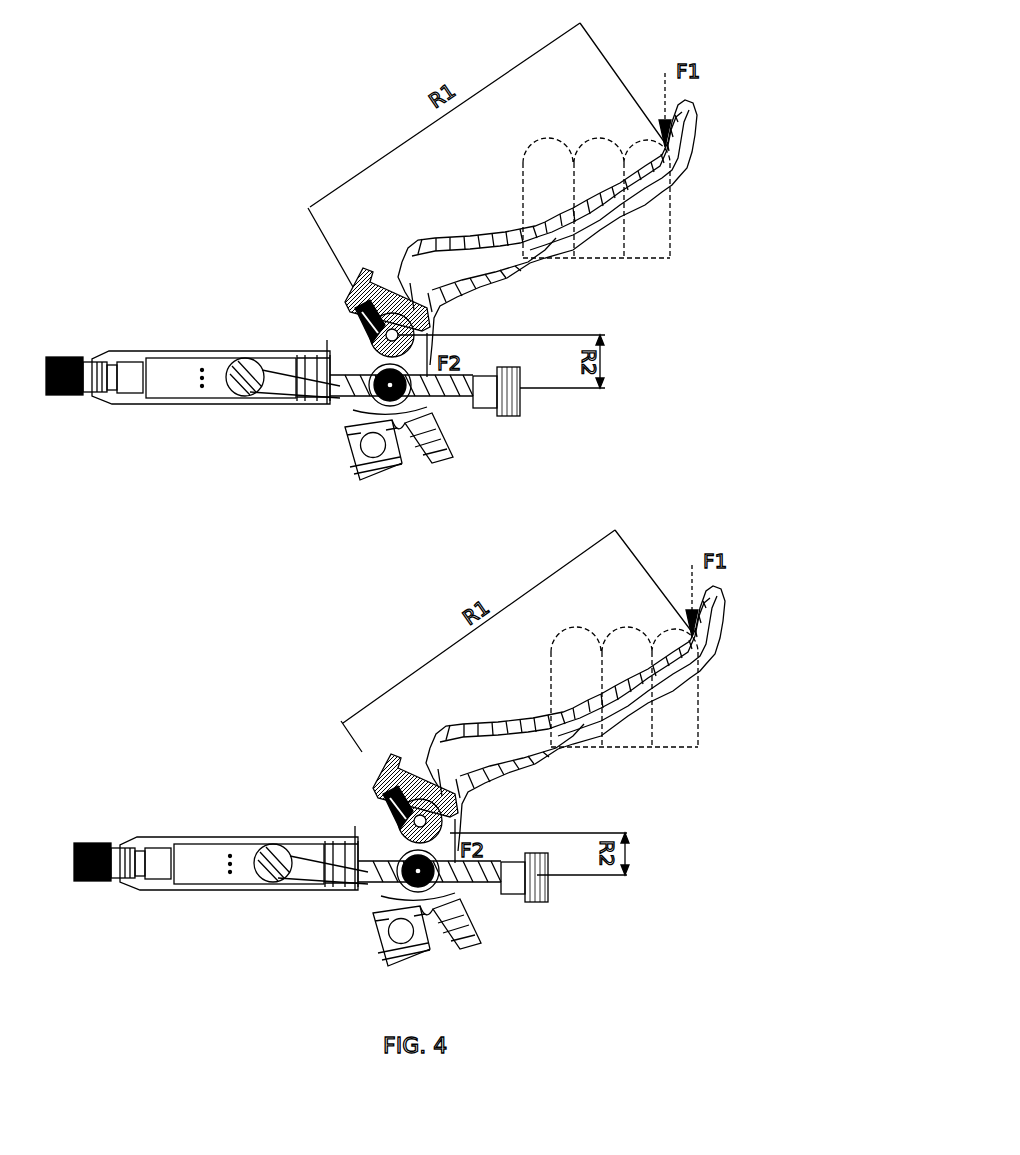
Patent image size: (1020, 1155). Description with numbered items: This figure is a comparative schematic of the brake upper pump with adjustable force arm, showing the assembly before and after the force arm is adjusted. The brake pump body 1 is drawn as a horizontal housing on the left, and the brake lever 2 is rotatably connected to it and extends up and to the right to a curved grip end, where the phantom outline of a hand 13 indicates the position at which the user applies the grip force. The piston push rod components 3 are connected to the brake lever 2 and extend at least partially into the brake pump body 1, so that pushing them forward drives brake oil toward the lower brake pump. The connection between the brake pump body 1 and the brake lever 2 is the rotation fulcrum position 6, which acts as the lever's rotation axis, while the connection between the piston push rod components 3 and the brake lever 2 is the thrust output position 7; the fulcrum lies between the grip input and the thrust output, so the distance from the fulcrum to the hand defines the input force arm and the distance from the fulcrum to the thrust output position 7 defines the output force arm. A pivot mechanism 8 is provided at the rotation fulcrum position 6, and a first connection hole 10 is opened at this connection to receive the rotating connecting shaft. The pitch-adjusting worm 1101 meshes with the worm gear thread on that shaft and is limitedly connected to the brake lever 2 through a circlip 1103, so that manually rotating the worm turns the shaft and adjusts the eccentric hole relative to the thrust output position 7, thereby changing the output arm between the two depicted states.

The brake pump body 1 is at (140, 405).
The brake lever 2 is at (680, 180).
The piston push rod components 3 is at (465, 383).
The rotation fulcrum position 6 is at (352, 322).
The thrust output position 7 is at (368, 402).
The pivot mechanism 8 is at (350, 305).
The first connection hole 10 is at (350, 337).
The hand 13 is at (644, 246).
The pitch-adjusting worm 1101 is at (353, 288).
The circlip 1103 is at (438, 315).